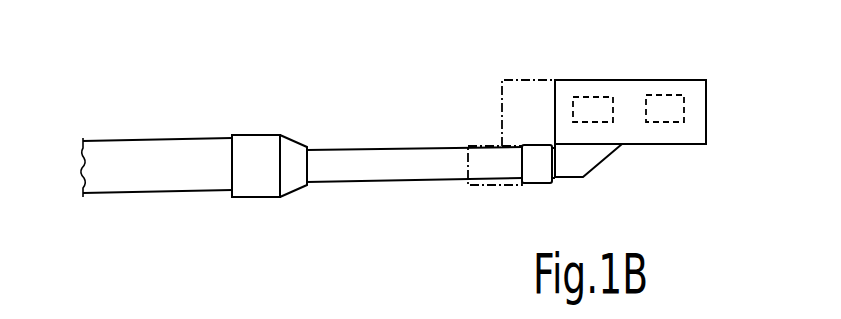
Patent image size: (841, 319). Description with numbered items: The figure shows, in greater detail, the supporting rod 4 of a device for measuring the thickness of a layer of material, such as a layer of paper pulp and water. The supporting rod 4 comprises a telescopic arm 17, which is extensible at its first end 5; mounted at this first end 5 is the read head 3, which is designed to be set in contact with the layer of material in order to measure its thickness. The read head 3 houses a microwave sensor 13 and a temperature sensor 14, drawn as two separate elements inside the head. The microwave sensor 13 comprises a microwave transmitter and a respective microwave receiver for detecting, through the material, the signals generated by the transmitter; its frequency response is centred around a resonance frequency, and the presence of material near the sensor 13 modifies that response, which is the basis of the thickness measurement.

The read head 3 is at (660, 58).
The supporting rod 4 is at (183, 122).
The first end 5 is at (322, 202).
The microwave sensor 13 is at (603, 117).
The temperature sensor 14 is at (670, 112).
The telescopic arm 17 is at (408, 176).